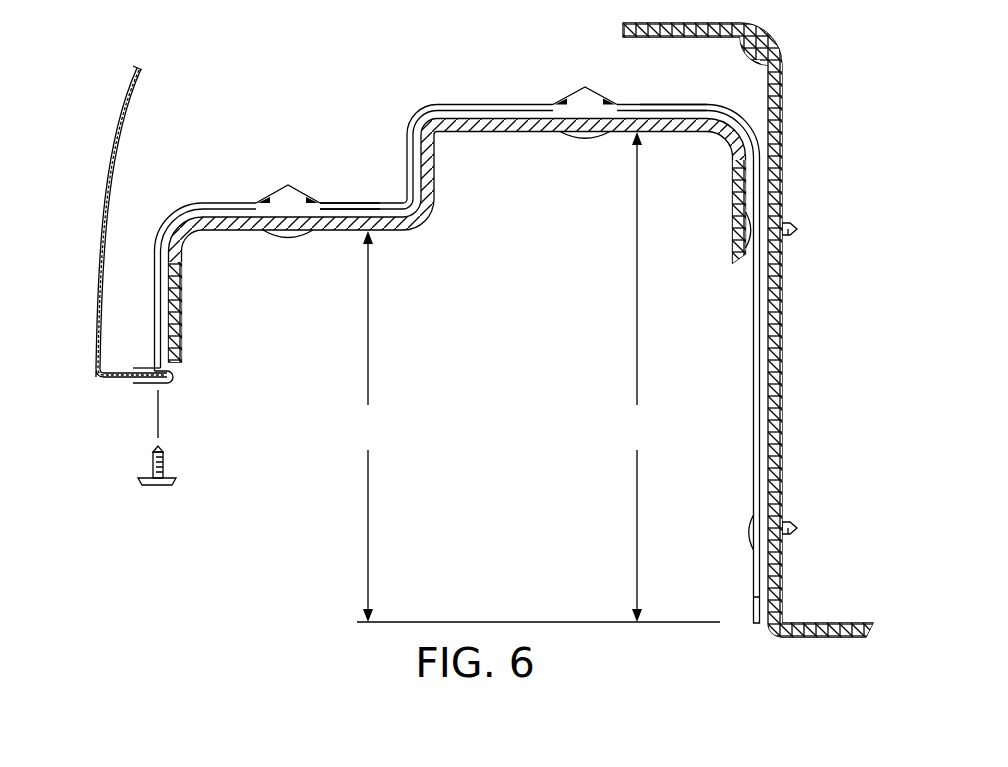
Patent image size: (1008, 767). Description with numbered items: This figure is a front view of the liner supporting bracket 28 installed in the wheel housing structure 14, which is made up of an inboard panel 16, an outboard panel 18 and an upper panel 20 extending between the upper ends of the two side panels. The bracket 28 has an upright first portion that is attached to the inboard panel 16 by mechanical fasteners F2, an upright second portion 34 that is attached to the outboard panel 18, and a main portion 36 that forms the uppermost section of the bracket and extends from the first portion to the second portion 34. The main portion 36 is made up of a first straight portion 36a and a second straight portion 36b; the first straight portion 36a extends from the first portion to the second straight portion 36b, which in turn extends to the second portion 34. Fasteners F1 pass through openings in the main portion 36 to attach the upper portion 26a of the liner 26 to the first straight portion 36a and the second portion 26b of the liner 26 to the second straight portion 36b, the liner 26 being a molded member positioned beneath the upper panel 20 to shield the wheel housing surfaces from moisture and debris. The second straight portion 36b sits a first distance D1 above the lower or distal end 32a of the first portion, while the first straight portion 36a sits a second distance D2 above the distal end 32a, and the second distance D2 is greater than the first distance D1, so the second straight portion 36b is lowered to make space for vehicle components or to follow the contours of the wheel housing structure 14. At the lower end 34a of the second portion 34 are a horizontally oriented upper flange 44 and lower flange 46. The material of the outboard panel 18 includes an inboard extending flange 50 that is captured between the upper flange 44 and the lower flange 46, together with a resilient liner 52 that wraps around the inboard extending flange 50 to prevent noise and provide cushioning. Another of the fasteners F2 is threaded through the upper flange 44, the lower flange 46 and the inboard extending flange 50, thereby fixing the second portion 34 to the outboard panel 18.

The wheel housing structure 14 is at (788, 111).
The inboard panel 16 is at (766, 100).
The outboard panel 18 is at (125, 130).
The upper panel 20 is at (668, 37).
The liner 26 is at (192, 313).
The upper portion of the liner 26a is at (488, 132).
The second portion of the liner 26b is at (325, 232).
The liner supporting bracket 28 is at (521, 98).
The distal end of the first portion 32a is at (753, 612).
The second portion 34 is at (158, 292).
The lower end of the second portion 34a is at (173, 373).
The main portion 36 is at (480, 105).
The first straight portion 36a is at (640, 105).
The second straight portion 36b is at (352, 203).
The upper flange 44 is at (143, 368).
The lower flange 46 is at (143, 385).
The inboard extending flange 50 is at (120, 368).
The resilient liner 52 is at (160, 385).
The first distance D1 is at (363, 426).
The second distance D2 is at (632, 377).
The mechanical fasteners F1 is at (286, 184).
The mechanical fasteners F2 is at (160, 485).